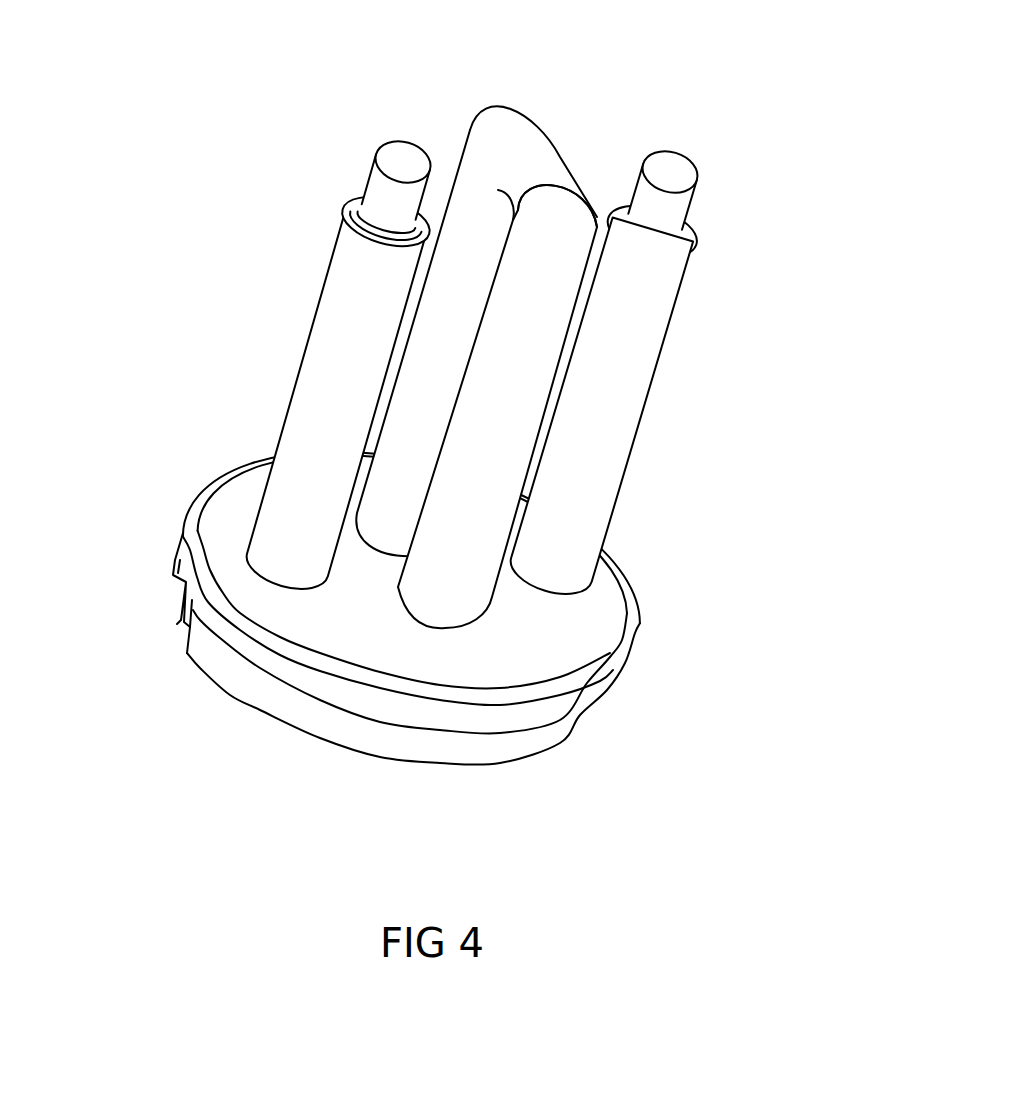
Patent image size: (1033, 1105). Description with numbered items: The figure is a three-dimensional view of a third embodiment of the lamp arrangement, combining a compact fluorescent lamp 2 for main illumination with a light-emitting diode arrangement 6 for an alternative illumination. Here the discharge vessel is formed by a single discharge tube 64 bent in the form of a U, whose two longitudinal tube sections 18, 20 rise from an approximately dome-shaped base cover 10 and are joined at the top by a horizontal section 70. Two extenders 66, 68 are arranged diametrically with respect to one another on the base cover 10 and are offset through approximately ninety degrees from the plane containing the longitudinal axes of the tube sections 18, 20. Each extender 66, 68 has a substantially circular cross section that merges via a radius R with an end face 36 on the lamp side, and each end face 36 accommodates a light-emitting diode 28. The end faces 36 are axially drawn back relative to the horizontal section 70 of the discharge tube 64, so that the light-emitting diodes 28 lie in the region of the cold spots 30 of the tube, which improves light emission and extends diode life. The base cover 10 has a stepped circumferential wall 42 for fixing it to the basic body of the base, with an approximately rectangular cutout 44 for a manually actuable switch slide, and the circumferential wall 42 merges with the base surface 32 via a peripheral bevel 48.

The compact fluorescent lamp 2 is at (364, 462).
The light-emitting diode arrangement 6 is at (708, 160).
The base cover 10 is at (659, 605).
The longitudinal tube section 18 is at (421, 273).
The longitudinal tube section 20 is at (541, 447).
The light-emitting diode 28 is at (405, 160).
The cold spot 30 is at (477, 109).
The base surface 32 is at (540, 628).
The end face 36 is at (352, 217).
The circumferential wall 42 is at (590, 695).
The cutout 44 is at (176, 617).
The peripheral bevel 48 is at (185, 530).
The discharge tube 64 is at (533, 316).
The extender 66 is at (335, 338).
The extender 68 is at (617, 405).
The horizontal section 70 is at (520, 130).
The radius R is at (343, 210).